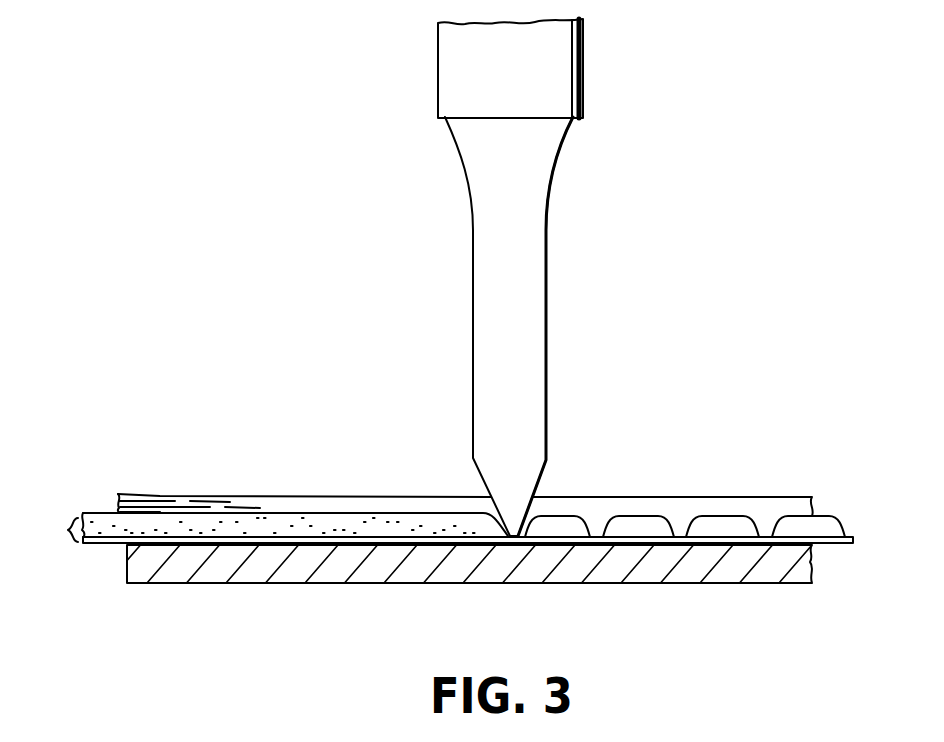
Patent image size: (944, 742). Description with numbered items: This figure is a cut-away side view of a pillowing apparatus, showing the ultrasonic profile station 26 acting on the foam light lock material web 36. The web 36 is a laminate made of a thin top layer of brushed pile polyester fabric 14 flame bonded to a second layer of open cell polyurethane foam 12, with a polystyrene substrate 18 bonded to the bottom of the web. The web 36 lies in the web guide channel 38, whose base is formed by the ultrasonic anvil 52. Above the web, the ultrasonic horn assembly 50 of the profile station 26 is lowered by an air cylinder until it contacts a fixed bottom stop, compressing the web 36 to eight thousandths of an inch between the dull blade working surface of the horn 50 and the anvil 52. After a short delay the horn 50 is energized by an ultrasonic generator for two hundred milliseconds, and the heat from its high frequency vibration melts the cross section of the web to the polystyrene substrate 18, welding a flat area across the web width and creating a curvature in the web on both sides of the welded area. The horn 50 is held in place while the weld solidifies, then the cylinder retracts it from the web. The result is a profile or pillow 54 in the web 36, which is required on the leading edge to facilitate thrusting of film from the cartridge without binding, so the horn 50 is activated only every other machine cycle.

The open cell polyurethane foam 12 is at (265, 530).
The polyester fabric 14 is at (318, 513).
The polystyrene substrate 18 is at (310, 545).
The ultrasonic profile station 26 is at (296, 286).
The foam light lock material web 36 is at (55, 531).
The web guide channel 38 is at (763, 512).
The ultrasonic horn assembly 50 is at (460, 77).
The ultrasonic anvil 52 is at (628, 565).
The pillow 54 is at (690, 510).